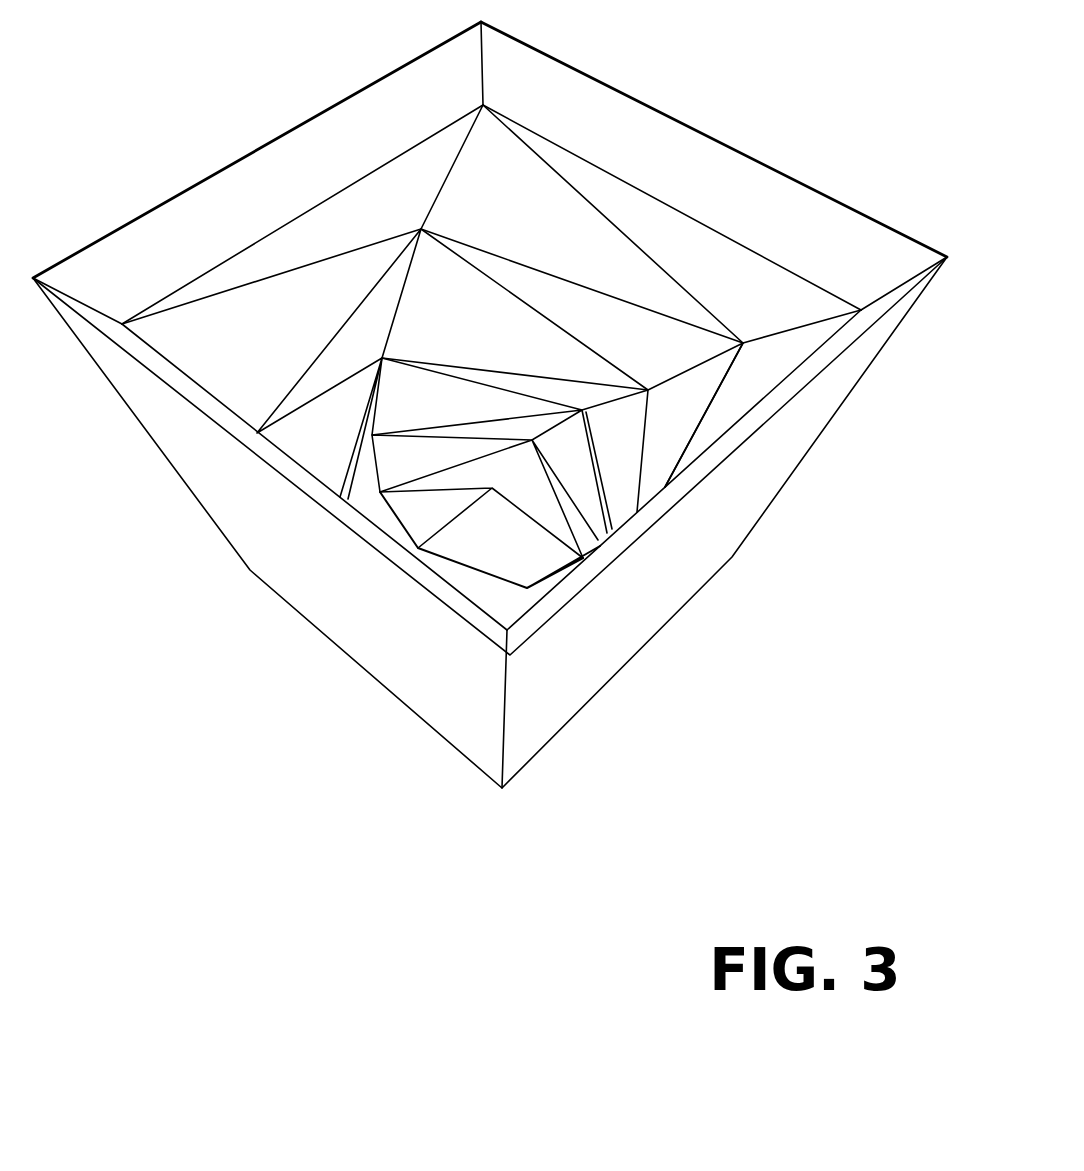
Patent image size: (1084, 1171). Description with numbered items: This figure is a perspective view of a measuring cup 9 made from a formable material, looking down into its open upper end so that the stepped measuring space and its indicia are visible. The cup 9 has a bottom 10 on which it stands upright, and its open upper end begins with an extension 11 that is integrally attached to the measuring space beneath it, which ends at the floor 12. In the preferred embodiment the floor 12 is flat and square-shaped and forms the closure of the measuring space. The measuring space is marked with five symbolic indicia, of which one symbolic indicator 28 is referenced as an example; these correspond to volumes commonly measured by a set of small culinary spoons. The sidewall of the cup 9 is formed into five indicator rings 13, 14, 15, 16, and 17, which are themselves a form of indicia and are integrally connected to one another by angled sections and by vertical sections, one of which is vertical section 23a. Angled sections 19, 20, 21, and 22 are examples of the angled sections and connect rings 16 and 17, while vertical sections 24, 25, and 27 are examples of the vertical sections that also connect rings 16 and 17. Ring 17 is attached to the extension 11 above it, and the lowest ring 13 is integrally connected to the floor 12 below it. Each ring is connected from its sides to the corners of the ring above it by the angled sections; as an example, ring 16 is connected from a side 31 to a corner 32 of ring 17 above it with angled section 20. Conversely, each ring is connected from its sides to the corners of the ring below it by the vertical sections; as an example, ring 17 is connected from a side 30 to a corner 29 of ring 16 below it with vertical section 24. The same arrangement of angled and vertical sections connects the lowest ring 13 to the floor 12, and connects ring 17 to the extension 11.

The cup 9 is at (742, 90).
The bottom 10 is at (600, 695).
The extension 11 is at (267, 178).
The floor 12 is at (490, 558).
The indicator ring 13 is at (539, 453).
The indicator ring 14 is at (589, 425).
The indicator ring 15 is at (651, 403).
The indicator ring 16 is at (733, 363).
The indicator ring 17 is at (838, 333).
The angled section 19 is at (300, 312).
The angled section 20 is at (611, 267).
The angled section 21 is at (707, 437).
The angled section 22 is at (470, 585).
The vertical section 23a is at (419, 168).
The vertical section 24 is at (386, 186).
The vertical section 25 is at (700, 238).
The vertical section 27 is at (799, 297).
The symbolic indicator 28 is at (774, 274).
The corner 29 is at (426, 229).
The side 30 is at (234, 257).
The side 31 is at (493, 255).
The corner 32 is at (483, 114).